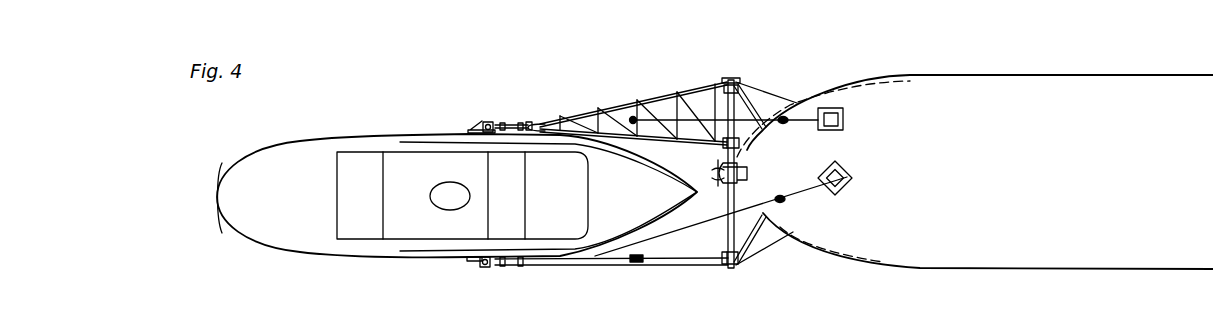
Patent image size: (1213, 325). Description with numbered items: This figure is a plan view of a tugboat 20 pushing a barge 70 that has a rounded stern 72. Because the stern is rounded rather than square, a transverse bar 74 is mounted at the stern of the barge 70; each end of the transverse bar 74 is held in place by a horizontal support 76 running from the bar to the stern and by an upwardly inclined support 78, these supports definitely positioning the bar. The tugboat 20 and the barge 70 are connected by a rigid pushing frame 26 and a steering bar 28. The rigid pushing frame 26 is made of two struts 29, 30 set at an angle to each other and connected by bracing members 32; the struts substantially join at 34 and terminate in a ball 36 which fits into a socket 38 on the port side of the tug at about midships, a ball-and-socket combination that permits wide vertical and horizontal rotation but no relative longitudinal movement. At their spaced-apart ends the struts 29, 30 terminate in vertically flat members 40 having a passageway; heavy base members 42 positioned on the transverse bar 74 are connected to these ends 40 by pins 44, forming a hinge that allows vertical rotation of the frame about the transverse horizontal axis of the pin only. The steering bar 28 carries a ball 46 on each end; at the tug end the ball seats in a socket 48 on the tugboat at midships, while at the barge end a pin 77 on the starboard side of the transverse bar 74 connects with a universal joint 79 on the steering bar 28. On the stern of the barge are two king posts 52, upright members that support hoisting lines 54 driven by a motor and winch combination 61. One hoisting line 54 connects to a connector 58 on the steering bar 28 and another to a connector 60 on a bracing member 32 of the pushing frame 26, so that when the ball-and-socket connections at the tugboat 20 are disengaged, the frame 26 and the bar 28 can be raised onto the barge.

The tugboat 20 is at (332, 120).
The rigid pushing frame 26 is at (627, 115).
The steering bar 28 is at (642, 268).
The strut 29 is at (617, 106).
The strut 30 is at (645, 139).
The bracing member 32 is at (706, 121).
The junction of struts 34 is at (512, 124).
The ball 36 is at (489, 123).
The socket 38 is at (480, 129).
The vertically flat member 40 is at (757, 88).
The base member 42 is at (725, 86).
The pin 44 is at (731, 79).
The ball 46 is at (486, 268).
The socket 48 is at (471, 262).
The king post 52 is at (785, 125).
The hoisting line 54 is at (805, 122).
The connector 58 is at (631, 264).
The connector 60 is at (636, 117).
The motor and winch combination 61 is at (845, 120).
The barge 70 is at (975, 154).
The rounded stern 72 is at (849, 252).
The transverse bar 74 is at (728, 214).
The horizontal support 76 is at (792, 103).
The pin 77 is at (734, 268).
The upwardly inclined support 78 is at (747, 100).
The universal joint 79 is at (723, 265).